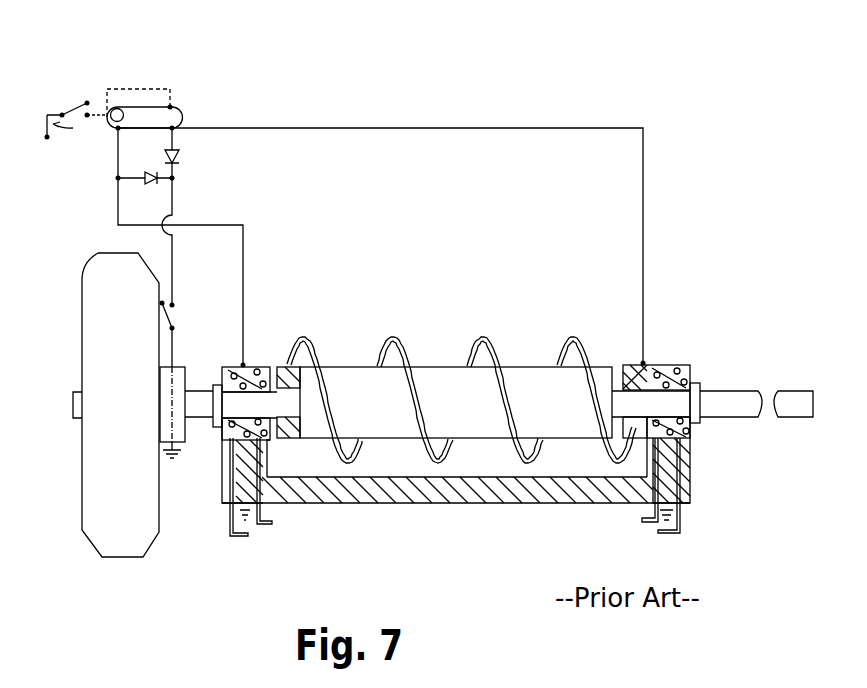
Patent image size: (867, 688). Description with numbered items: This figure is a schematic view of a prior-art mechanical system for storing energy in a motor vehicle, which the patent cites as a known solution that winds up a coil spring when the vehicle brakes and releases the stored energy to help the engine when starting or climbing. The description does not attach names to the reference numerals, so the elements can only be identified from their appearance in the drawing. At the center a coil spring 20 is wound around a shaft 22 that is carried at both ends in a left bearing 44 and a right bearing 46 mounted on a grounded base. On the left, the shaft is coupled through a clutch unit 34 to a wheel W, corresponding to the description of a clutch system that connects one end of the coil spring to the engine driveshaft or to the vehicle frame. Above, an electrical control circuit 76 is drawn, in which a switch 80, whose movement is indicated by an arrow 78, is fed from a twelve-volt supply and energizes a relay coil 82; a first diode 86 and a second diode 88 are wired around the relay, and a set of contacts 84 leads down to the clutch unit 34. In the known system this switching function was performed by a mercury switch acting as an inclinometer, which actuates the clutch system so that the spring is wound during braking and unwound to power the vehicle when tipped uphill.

The helical spring 20 is at (393, 338).
The roller 22 is at (508, 377).
The brake 34 is at (187, 382).
The bearing 44 is at (262, 367).
The bearing 46 is at (673, 365).
The control circuit 76 is at (141, 46).
The switch actuation direction 78 is at (81, 135).
The switch 80 is at (75, 100).
The relay 82 is at (142, 103).
The relay contacts 84 is at (167, 315).
The diode 86 is at (180, 157).
The diode 88 is at (152, 185).
The wheel W is at (92, 282).